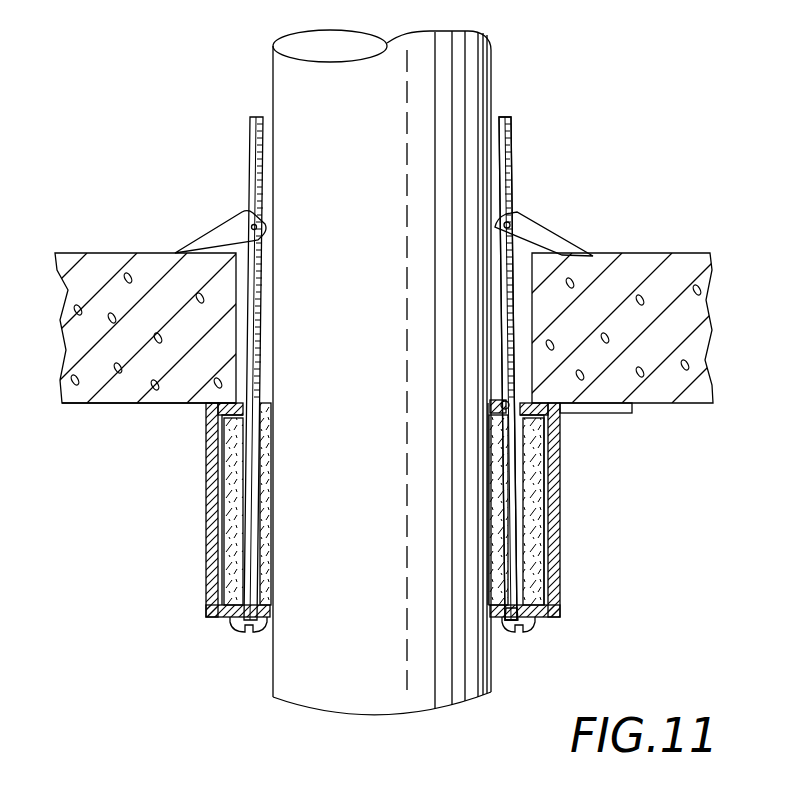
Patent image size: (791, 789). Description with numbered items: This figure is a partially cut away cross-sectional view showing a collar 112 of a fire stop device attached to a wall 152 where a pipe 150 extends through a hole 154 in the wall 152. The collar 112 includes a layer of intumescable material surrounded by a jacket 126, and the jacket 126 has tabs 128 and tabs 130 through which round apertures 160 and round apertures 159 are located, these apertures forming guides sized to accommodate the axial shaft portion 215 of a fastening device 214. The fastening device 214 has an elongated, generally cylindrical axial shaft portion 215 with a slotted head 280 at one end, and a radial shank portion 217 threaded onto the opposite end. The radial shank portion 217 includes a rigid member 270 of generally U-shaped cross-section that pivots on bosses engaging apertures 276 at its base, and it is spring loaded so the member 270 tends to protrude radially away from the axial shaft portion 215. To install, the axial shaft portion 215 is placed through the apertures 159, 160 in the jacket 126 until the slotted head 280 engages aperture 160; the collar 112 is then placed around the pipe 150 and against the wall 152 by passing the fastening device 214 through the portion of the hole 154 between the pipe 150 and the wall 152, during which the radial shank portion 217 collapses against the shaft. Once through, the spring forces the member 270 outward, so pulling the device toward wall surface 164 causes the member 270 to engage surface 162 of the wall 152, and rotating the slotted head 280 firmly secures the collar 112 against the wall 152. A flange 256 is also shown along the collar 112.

The collar 112 is at (463, 560).
The jacket 126 is at (558, 542).
The tabs 128 is at (545, 623).
The tabs 130 is at (492, 410).
The pipe 150 is at (328, 690).
The wall 152 is at (705, 295).
The hole 154 is at (242, 257).
The round apertures 159 is at (494, 403).
The round apertures 160 is at (509, 628).
The surface 162 is at (77, 252).
The wall surface 164 is at (72, 404).
The fastening device 214 is at (500, 315).
The axial shaft portion 215 is at (507, 357).
The radial shank portion 217 is at (240, 207).
The flange 256 is at (637, 412).
The rigid member 270 is at (552, 238).
The apertures 276 is at (522, 213).
The slotted head 280 is at (532, 622).